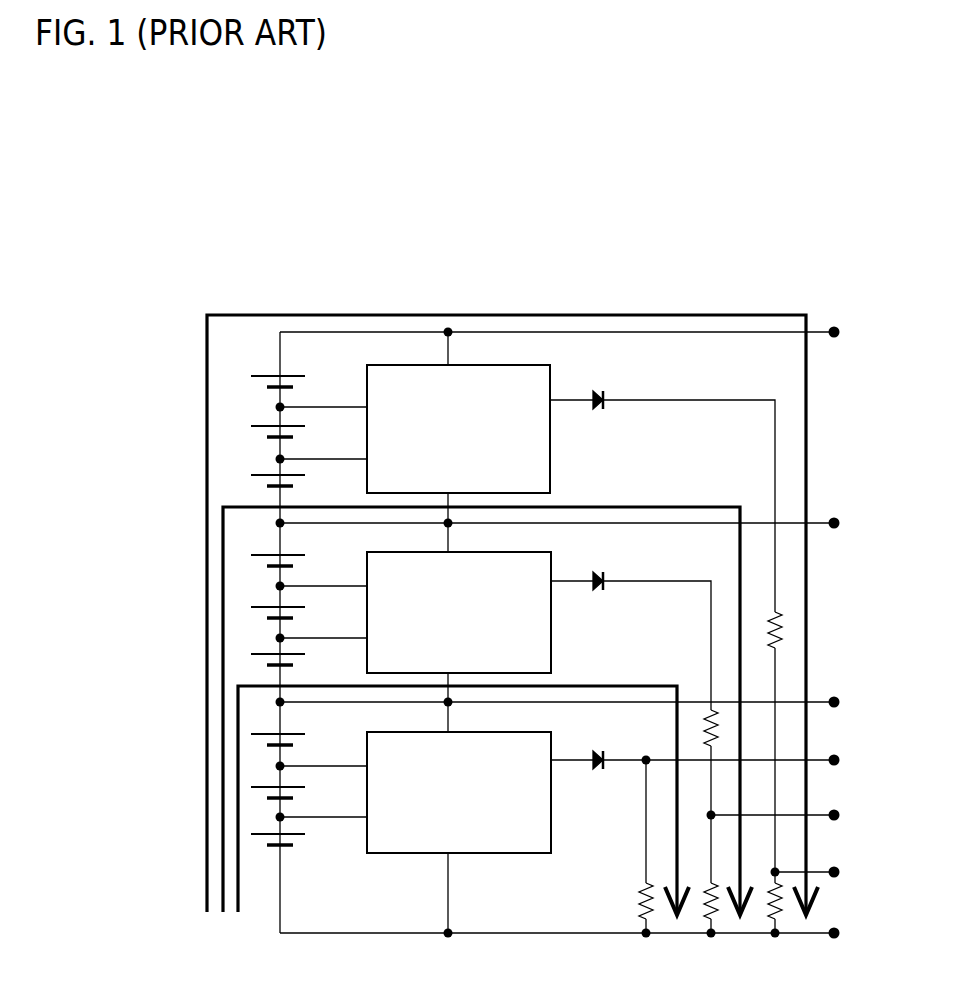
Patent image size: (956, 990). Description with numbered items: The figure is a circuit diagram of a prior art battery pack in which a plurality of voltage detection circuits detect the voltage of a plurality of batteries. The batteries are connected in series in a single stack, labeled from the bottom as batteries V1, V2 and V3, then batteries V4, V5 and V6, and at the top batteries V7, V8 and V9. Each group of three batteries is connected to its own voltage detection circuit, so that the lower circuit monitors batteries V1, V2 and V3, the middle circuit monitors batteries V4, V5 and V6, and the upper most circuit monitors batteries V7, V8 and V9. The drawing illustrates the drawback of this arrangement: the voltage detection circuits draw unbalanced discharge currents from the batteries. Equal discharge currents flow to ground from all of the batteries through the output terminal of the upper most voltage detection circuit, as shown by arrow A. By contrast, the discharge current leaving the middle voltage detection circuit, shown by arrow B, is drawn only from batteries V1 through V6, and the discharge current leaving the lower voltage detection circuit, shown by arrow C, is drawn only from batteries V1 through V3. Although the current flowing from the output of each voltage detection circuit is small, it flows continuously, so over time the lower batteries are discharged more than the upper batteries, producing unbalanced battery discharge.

The arrow A is at (512, 602).
The arrow B is at (487, 697).
The arrow C is at (463, 786).
The battery V1 is at (326, 834).
The battery V2 is at (326, 787).
The battery V3 is at (326, 734).
The battery V4 is at (326, 654).
The battery V5 is at (326, 607).
The battery V6 is at (326, 555).
The battery V7 is at (326, 475).
The battery V8 is at (326, 426).
The battery V9 is at (326, 376).